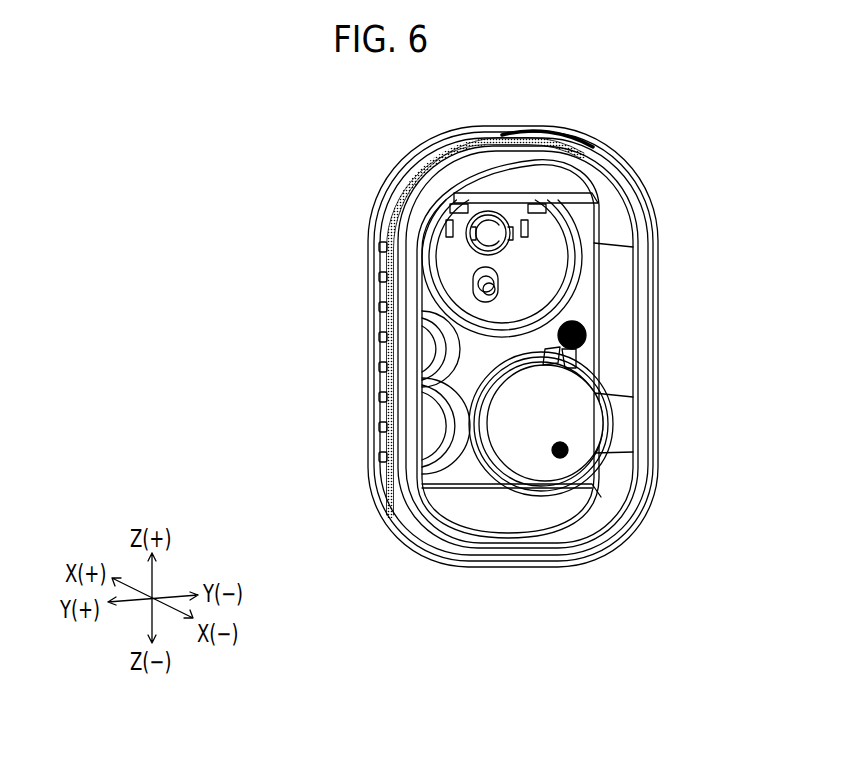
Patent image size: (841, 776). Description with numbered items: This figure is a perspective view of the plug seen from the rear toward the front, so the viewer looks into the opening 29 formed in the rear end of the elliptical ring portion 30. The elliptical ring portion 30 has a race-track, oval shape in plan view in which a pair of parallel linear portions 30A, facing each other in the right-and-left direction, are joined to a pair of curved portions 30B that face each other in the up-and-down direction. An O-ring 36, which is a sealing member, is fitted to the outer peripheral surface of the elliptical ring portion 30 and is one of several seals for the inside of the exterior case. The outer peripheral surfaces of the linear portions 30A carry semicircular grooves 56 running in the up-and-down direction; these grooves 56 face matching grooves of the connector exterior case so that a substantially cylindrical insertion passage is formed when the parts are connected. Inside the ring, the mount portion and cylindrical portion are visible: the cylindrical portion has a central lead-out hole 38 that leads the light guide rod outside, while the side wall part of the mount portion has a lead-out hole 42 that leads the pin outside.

The elliptical ring portion 30 is at (589, 121).
The linear portions 30A is at (643, 335).
The curved portions 30B is at (540, 157).
The O-ring 36 is at (428, 166).
The semicircular grooves 56 is at (382, 310).
The opening 29 is at (614, 263).
The lead-out hole 38 is at (492, 234).
The lead-out hole 42 is at (432, 419).